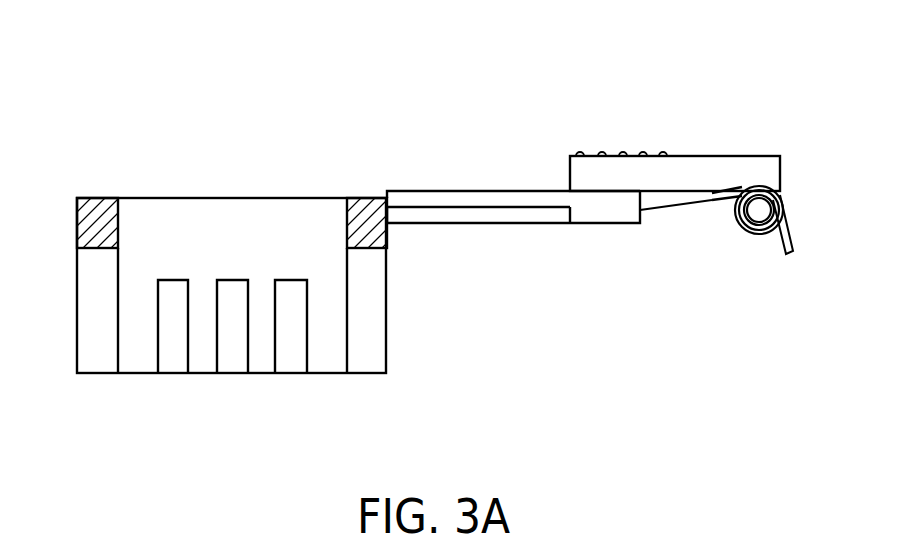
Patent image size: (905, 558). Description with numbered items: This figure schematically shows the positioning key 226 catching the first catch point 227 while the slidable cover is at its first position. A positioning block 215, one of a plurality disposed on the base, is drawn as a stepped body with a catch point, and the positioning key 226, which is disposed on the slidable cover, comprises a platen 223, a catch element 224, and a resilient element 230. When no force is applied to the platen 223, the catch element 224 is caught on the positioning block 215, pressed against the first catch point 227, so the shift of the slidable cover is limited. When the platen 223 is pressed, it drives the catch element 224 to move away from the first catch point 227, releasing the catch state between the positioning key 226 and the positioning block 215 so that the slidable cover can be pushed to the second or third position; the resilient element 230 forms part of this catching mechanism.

The positioning block 215 is at (100, 207).
The first catch point 227 is at (391, 192).
The catch element 224 is at (463, 207).
The platen 223 is at (745, 162).
The positioning key 226 is at (598, 105).
The resilient element 230 is at (755, 234).